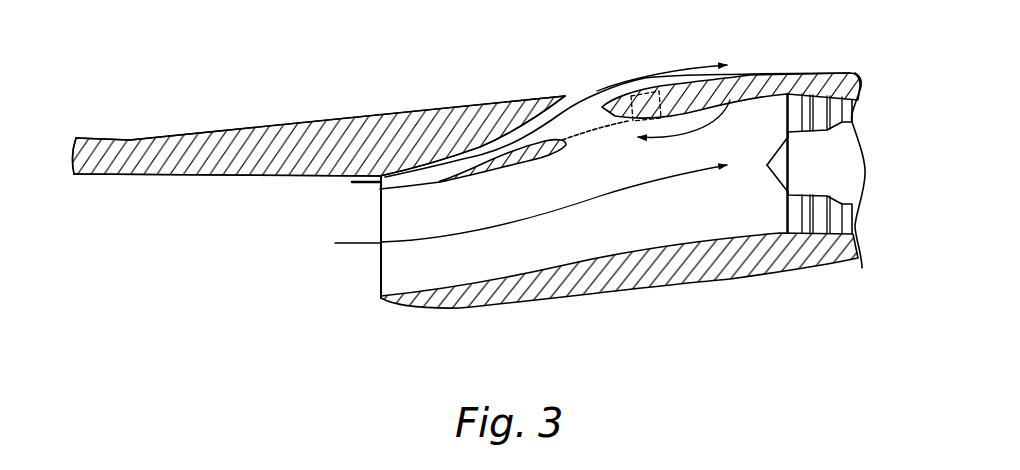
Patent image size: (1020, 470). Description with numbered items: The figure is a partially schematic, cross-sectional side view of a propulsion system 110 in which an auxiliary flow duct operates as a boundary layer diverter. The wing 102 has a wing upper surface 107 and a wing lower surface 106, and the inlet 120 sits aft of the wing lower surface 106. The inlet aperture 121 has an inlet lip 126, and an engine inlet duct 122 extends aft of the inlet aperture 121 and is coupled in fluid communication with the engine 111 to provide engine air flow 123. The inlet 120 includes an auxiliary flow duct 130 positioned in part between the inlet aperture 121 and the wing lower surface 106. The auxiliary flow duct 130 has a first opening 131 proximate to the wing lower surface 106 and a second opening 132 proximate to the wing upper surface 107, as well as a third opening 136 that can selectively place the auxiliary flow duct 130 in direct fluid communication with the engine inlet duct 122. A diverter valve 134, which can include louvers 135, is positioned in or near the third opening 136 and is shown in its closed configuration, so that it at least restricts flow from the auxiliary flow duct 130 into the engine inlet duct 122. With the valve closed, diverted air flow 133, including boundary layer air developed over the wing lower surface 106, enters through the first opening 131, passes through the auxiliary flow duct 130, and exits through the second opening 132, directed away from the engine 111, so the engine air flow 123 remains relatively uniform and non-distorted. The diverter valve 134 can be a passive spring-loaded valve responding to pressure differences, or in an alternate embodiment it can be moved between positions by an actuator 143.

The wing 102 is at (118, 136).
The wing upper surface 107 is at (217, 133).
The wing lower surface 106 is at (182, 174).
The auxiliary flow duct 130 is at (513, 133).
The diverted air flow 133 is at (470, 152).
The first opening 131 is at (375, 188).
The diverter valve 134 is at (574, 154).
The second opening 132 is at (585, 87).
The louvers 135 is at (598, 132).
The third opening 136 is at (746, 73).
The actuator 143 is at (673, 82).
The inlet 120 is at (348, 283).
The inlet lip 126 is at (381, 299).
The inlet aperture 121 is at (380, 230).
The engine air flow 123 is at (603, 195).
The engine inlet duct 122 is at (538, 257).
The propulsion system 110 is at (793, 294).
The engine 111 is at (845, 163).